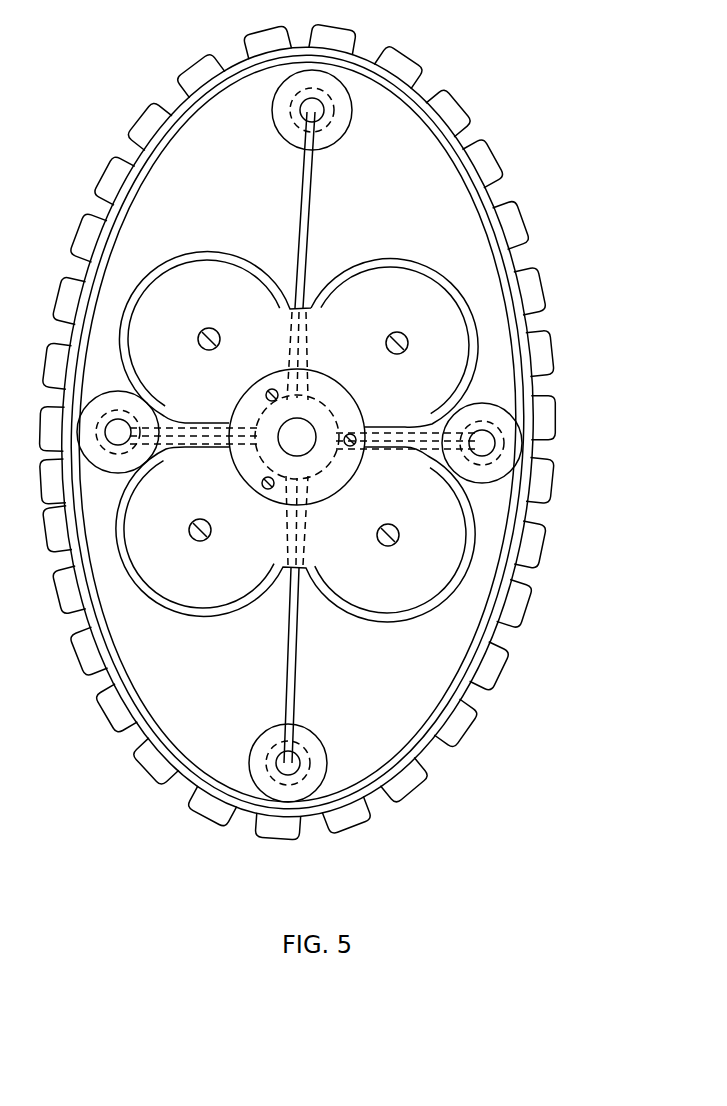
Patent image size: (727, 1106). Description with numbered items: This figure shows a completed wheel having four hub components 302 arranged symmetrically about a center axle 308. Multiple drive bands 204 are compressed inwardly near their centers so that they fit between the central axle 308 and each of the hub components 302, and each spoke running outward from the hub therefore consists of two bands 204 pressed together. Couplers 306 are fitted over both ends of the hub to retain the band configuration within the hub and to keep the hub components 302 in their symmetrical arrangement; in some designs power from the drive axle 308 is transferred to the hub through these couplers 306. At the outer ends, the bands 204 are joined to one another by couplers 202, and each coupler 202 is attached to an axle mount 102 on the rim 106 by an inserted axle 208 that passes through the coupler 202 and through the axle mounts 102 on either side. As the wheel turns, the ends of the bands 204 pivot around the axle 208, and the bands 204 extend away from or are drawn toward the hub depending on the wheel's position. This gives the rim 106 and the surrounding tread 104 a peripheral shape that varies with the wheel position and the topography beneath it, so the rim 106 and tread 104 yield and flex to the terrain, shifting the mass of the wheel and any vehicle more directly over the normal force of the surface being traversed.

The axle mount 102 is at (343, 138).
The tread 104 is at (500, 190).
The rim 106 is at (118, 222).
The coupler 202 is at (288, 126).
The drive band 204 is at (311, 221).
The axle 208 is at (298, 106).
The hub component 302 is at (378, 416).
The coupler 306 is at (421, 267).
The center axle 308 is at (282, 447).